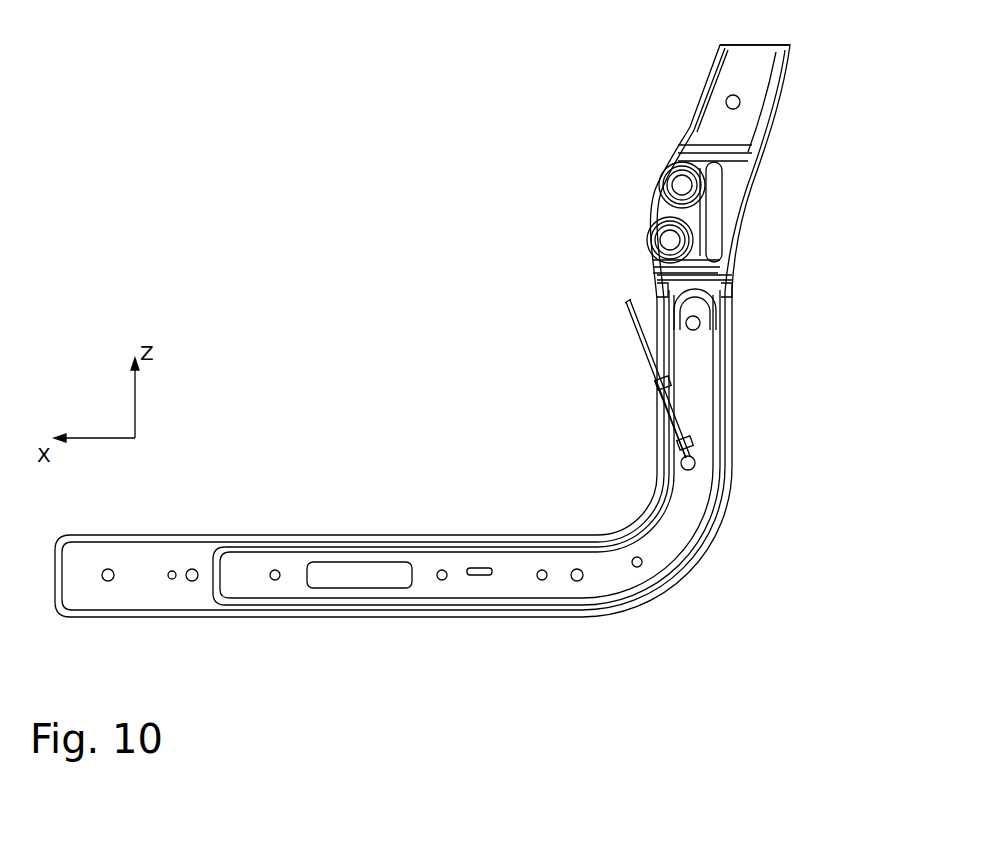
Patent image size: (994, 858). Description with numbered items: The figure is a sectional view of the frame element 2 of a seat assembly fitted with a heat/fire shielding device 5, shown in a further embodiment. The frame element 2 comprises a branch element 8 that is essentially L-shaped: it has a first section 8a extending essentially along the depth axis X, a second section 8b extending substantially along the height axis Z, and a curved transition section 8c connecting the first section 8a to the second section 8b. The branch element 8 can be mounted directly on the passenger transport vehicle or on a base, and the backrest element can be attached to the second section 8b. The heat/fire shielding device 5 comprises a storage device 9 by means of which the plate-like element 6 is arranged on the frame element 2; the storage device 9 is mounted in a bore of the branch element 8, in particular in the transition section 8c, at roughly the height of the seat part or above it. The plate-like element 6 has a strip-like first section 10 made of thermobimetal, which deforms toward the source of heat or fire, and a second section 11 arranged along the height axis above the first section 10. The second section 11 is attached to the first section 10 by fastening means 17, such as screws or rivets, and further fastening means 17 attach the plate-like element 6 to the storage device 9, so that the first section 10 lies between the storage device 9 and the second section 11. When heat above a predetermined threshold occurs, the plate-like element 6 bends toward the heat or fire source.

The frame element 2 is at (780, 82).
The branch element 8 is at (88, 602).
The first section 8a is at (182, 618).
The second section 8b is at (743, 210).
The curved transition section 8c is at (731, 374).
The storage device 9 is at (700, 462).
The first section 10 is at (660, 428).
The second section 11 is at (625, 308).
The heat/fire shielding device 5 is at (622, 379).
The plate-like element 6 is at (640, 352).
The fastening means 17 is at (655, 392).